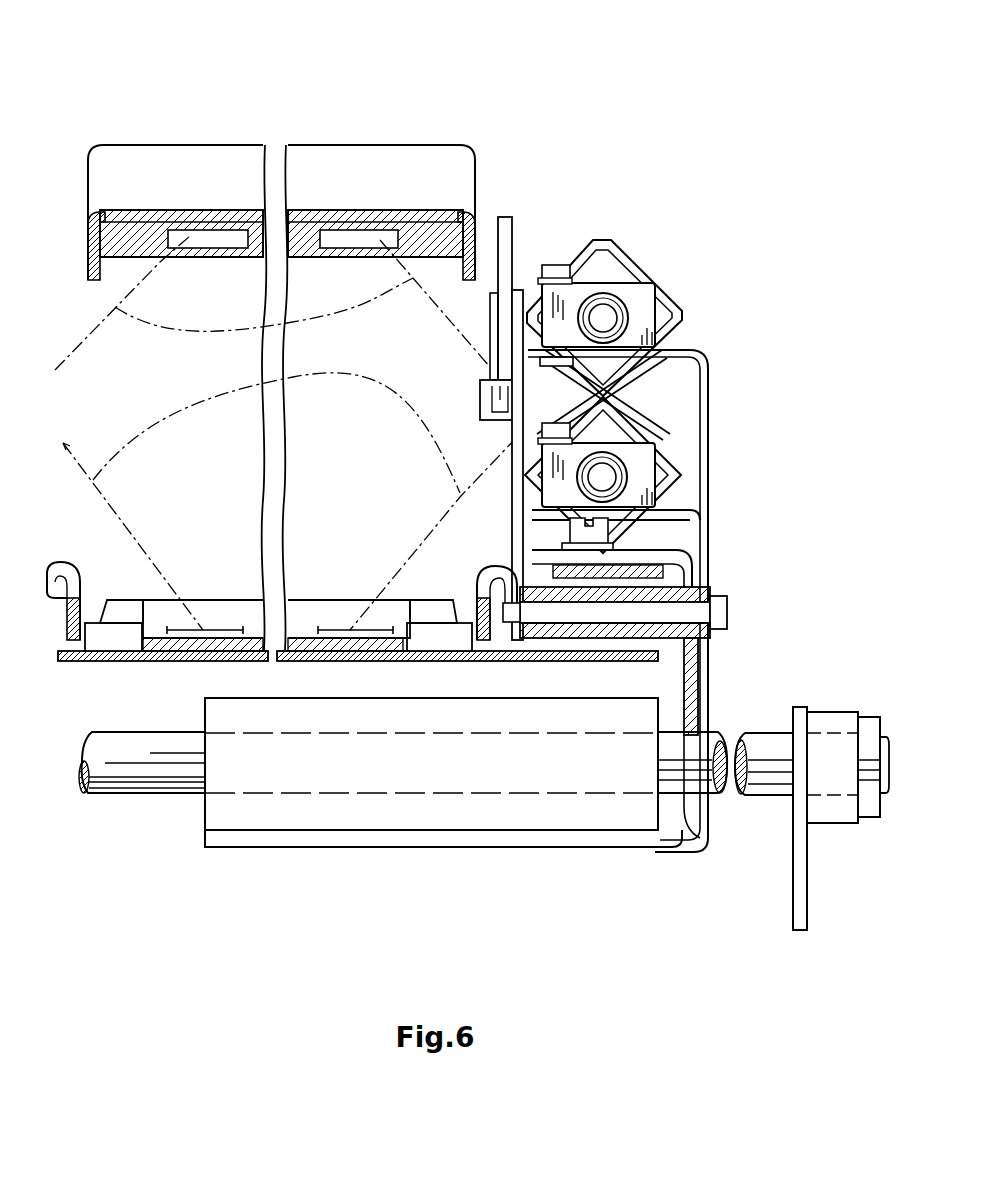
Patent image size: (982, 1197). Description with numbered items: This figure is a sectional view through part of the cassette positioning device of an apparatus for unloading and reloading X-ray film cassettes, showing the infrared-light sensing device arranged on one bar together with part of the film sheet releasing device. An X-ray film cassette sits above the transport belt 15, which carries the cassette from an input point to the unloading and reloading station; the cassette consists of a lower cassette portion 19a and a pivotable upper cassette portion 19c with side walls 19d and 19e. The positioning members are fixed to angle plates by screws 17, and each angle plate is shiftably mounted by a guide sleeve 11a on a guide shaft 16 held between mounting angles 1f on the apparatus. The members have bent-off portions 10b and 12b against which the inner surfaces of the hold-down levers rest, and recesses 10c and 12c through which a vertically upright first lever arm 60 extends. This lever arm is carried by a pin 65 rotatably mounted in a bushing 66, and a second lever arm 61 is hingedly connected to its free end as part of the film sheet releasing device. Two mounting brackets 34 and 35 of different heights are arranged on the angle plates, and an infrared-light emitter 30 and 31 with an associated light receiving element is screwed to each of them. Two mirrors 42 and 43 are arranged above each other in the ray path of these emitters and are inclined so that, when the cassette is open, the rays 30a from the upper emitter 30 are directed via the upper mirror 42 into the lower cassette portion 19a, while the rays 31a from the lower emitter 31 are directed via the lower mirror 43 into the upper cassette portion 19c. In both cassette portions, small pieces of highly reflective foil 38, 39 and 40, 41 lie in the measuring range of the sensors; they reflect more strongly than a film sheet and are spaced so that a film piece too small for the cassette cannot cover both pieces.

The mounting angles 1f is at (790, 890).
The bent-off portion 10b is at (482, 630).
The recess 10c is at (477, 570).
The guide sleeve 11a is at (320, 810).
The bent-off portion 12b is at (67, 612).
The recess 12c is at (73, 562).
The transport belt 15 is at (522, 662).
The guide shaft 16 is at (178, 770).
The screws 17 is at (707, 522).
The lower cassette portion 19a is at (133, 637).
The upper cassette portion 19c is at (350, 180).
The side wall 19d is at (480, 227).
The side wall 19e is at (88, 256).
The infrared-light emitter 30 is at (640, 287).
The rays 30a is at (290, 497).
The infrared-light emitter 31 is at (640, 470).
The rays 31a is at (272, 303).
The mounting bracket 34 is at (710, 383).
The mounting bracket 35 is at (677, 510).
The foil 38 is at (333, 630).
The foil 39 is at (225, 630).
The foil 40 is at (376, 243).
The foil 41 is at (190, 235).
The mirror 42 is at (597, 270).
The mirror 43 is at (613, 432).
The first lever arm 60 is at (510, 517).
The second lever arm 61 is at (510, 255).
The pin 65 is at (592, 610).
The bushing 66 is at (640, 630).